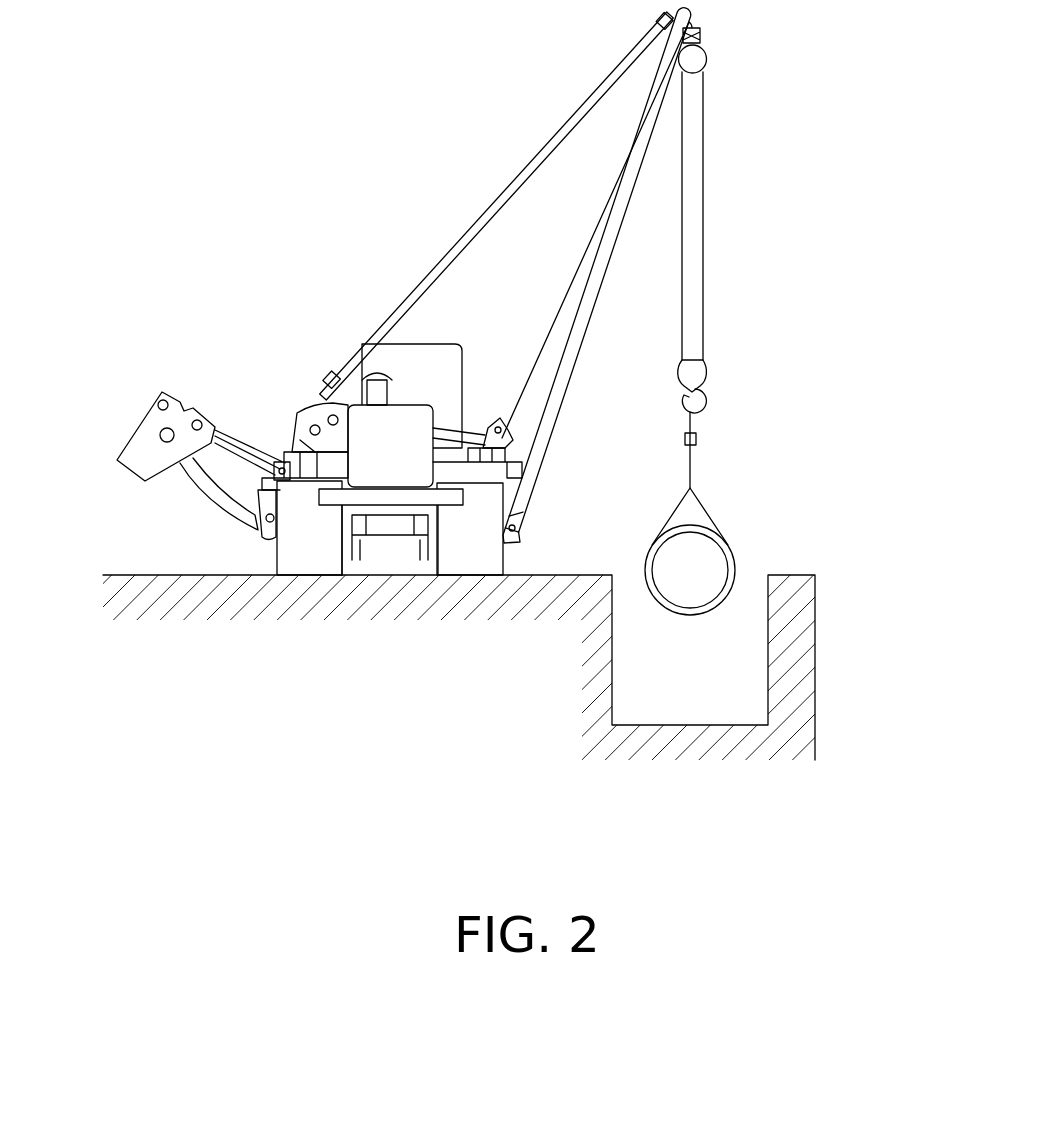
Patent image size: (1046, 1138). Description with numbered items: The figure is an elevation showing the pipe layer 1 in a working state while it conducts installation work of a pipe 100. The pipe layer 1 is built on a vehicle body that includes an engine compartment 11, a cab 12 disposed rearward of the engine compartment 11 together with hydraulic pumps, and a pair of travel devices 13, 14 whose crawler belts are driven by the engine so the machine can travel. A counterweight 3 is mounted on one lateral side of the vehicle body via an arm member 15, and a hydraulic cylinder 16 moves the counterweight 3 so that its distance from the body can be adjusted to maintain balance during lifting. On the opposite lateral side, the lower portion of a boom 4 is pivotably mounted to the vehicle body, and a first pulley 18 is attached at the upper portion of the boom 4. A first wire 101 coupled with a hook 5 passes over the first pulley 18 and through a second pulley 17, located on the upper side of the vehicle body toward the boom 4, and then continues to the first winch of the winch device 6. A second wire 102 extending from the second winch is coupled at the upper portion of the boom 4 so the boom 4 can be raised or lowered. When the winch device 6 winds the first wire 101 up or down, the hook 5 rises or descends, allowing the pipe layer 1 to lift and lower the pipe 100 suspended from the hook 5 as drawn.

The pipe layer 1 is at (429, 373).
The counterweight 3 is at (135, 453).
The boom 4 is at (651, 108).
The hook 5 is at (707, 396).
The winch device 6 is at (300, 407).
The engine compartment 11 is at (385, 465).
The cab 12 is at (418, 352).
The travel device 13 is at (311, 566).
The travel device 14 is at (479, 566).
The arm member 15 is at (212, 505).
The hydraulic cylinder 16 is at (240, 435).
The second pulley 17 is at (500, 418).
The first pulley 18 is at (707, 60).
The pipe 100 is at (730, 568).
The first wire 101 is at (573, 283).
The second wire 102 is at (464, 236).